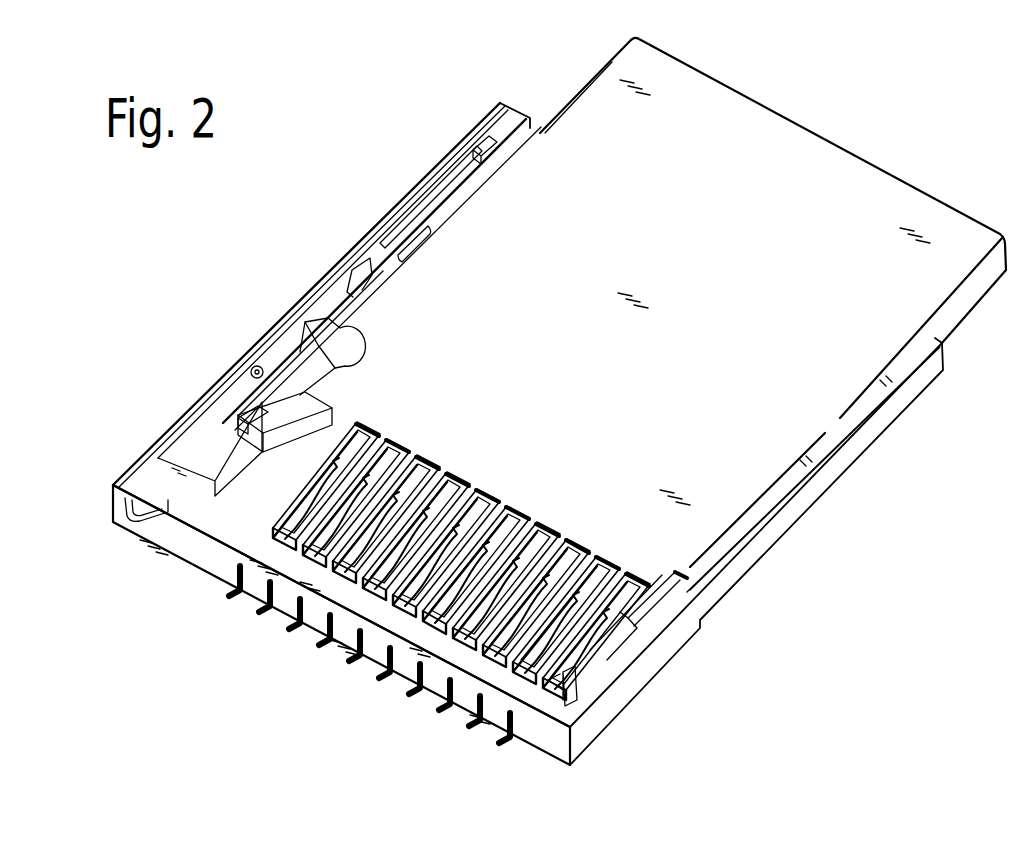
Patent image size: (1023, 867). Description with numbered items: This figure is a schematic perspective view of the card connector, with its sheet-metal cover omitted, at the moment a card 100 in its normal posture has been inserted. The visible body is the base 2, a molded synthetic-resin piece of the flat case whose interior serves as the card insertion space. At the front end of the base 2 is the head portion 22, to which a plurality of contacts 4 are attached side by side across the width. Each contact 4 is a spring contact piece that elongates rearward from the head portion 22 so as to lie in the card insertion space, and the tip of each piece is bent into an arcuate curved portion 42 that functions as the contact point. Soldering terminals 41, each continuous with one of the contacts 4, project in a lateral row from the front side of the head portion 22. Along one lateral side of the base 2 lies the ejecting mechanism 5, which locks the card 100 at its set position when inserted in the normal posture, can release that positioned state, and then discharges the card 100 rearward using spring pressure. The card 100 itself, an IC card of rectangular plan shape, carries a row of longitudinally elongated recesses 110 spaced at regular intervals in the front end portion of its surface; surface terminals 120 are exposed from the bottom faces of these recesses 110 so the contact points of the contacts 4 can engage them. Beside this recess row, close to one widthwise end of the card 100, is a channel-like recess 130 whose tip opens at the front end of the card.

The card 100 is at (561, 99).
The ejecting mechanism 5 is at (438, 190).
The channel-like recess 130 is at (236, 404).
The recess 110 is at (398, 455).
The surface terminal 120 is at (450, 462).
The head portion 22 is at (303, 570).
The soldering terminal 41 is at (500, 750).
The base 2 is at (678, 646).
The arcuate curved portion 42 is at (587, 627).
The contact 4 is at (592, 660).